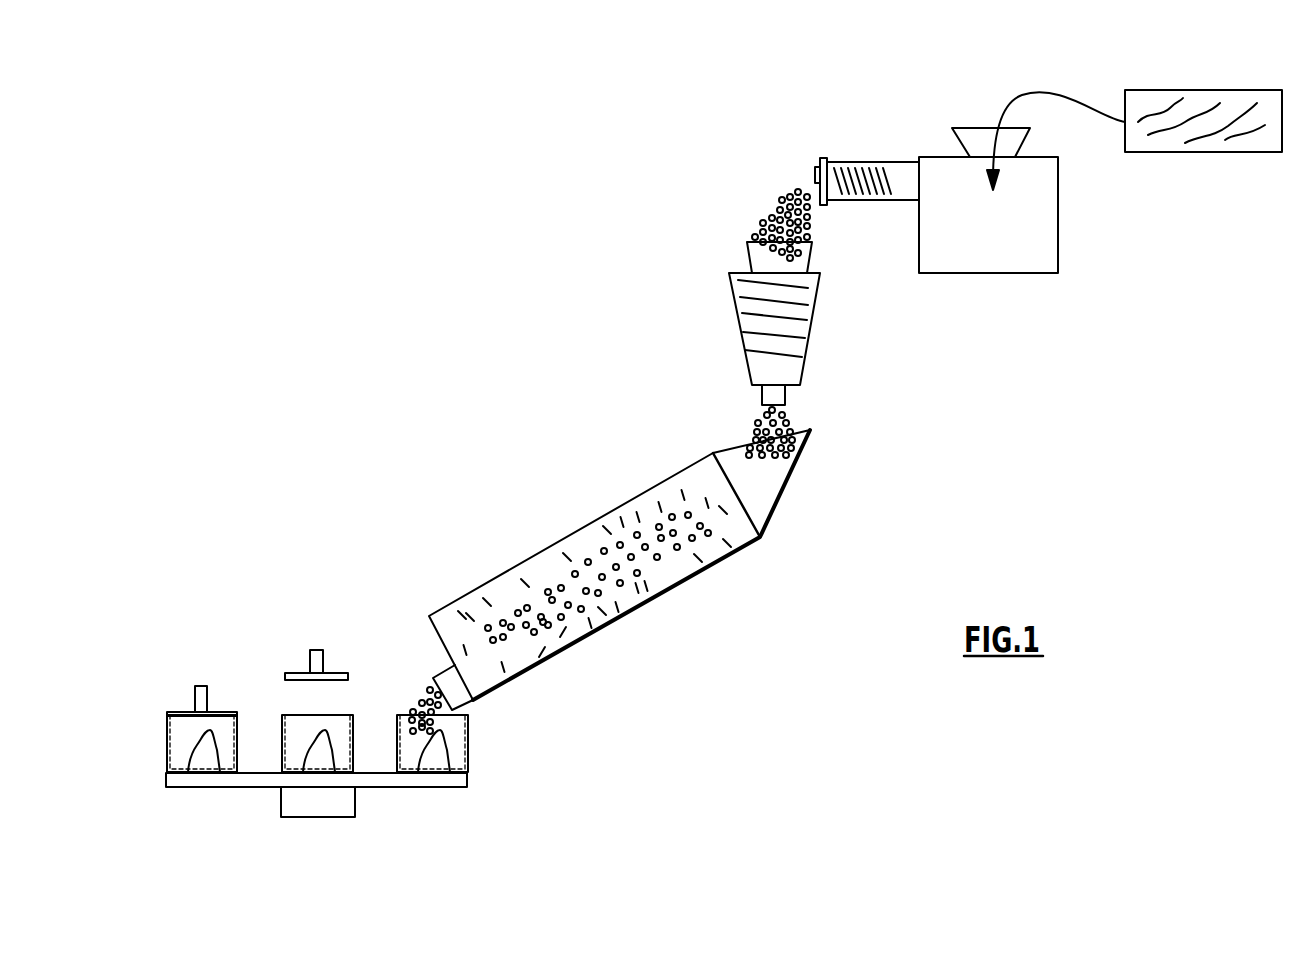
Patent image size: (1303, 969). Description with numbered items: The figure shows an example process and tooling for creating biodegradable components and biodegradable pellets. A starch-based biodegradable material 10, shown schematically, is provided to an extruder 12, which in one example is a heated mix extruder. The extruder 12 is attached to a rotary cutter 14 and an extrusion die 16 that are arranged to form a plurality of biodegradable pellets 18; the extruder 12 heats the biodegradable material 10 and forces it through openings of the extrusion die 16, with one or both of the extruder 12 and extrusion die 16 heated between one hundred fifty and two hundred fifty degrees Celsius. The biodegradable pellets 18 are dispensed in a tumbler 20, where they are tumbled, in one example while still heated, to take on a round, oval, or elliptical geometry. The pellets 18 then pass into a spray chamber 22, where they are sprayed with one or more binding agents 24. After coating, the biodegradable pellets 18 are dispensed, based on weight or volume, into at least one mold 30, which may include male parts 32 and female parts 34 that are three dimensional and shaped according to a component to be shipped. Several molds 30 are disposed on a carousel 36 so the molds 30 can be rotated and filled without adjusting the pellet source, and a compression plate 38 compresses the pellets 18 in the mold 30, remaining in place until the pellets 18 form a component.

The starch-based biodegradable material 10 is at (1216, 90).
The extruder 12 is at (1025, 234).
The rotary cutter 14 is at (815, 172).
The extrusion die 16 is at (823, 158).
The biodegradable pellets 18 is at (775, 215).
The tumbler 20 is at (793, 320).
The spray chamber 22 is at (619, 570).
The binding agent 24 is at (503, 584).
The mold 30 is at (339, 741).
The male part 32 is at (200, 760).
The female part 34 is at (453, 748).
The carousel 36 is at (486, 777).
The compression plate 38 is at (335, 673).